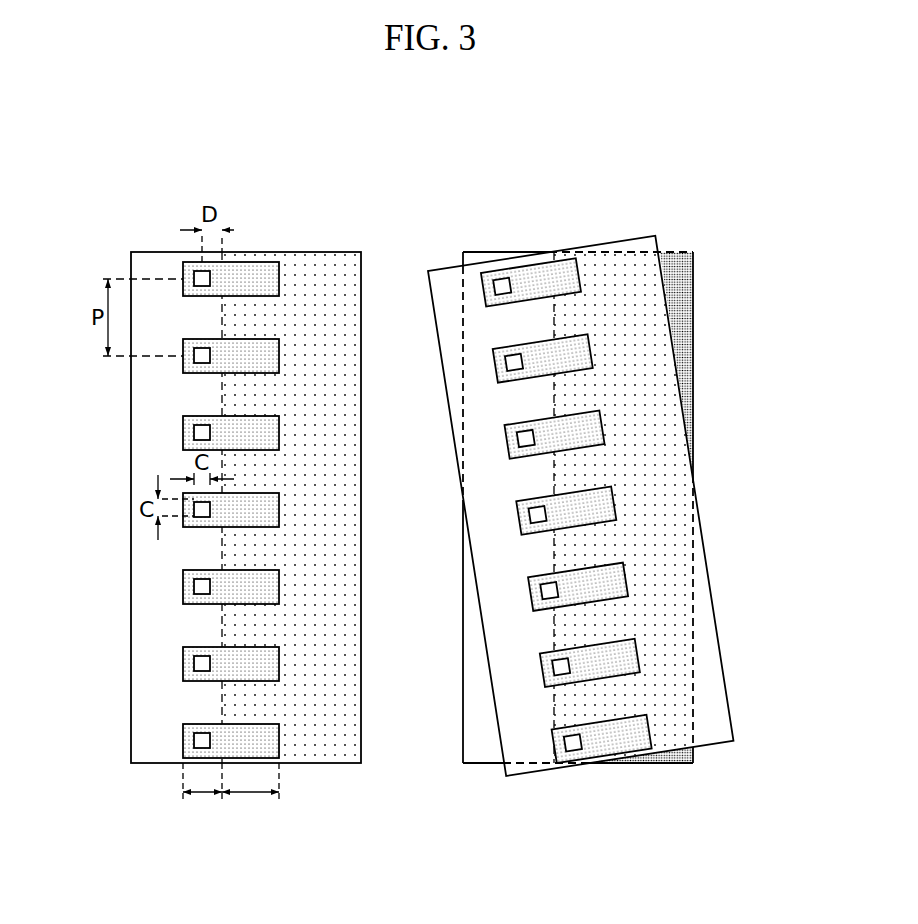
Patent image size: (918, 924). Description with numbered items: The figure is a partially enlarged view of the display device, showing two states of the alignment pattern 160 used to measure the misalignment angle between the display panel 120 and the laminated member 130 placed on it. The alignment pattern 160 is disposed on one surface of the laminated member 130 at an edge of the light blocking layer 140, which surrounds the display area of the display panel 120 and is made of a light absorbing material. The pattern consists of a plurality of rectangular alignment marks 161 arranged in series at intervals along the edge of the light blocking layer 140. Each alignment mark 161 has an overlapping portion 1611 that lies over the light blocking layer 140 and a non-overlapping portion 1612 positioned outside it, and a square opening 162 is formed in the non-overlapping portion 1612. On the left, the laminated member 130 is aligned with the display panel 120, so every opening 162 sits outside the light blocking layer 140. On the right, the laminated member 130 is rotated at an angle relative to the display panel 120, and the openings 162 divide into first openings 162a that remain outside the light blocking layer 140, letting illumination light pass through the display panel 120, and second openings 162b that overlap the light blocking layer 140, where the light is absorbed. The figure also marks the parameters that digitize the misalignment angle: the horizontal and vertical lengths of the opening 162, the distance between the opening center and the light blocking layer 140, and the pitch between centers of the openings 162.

The display panel 120 is at (697, 246).
The laminated member 130 is at (726, 599).
The light blocking layer 140 is at (327, 748).
The alignment pattern 160 is at (126, 233).
The alignment mark 161 is at (183, 660).
The opening 162 is at (192, 425).
The first opening 162a is at (527, 438).
The second opening 162b is at (543, 662).
The overlapping portion 1611 is at (250, 795).
The non-overlapping portion 1612 is at (196, 795).